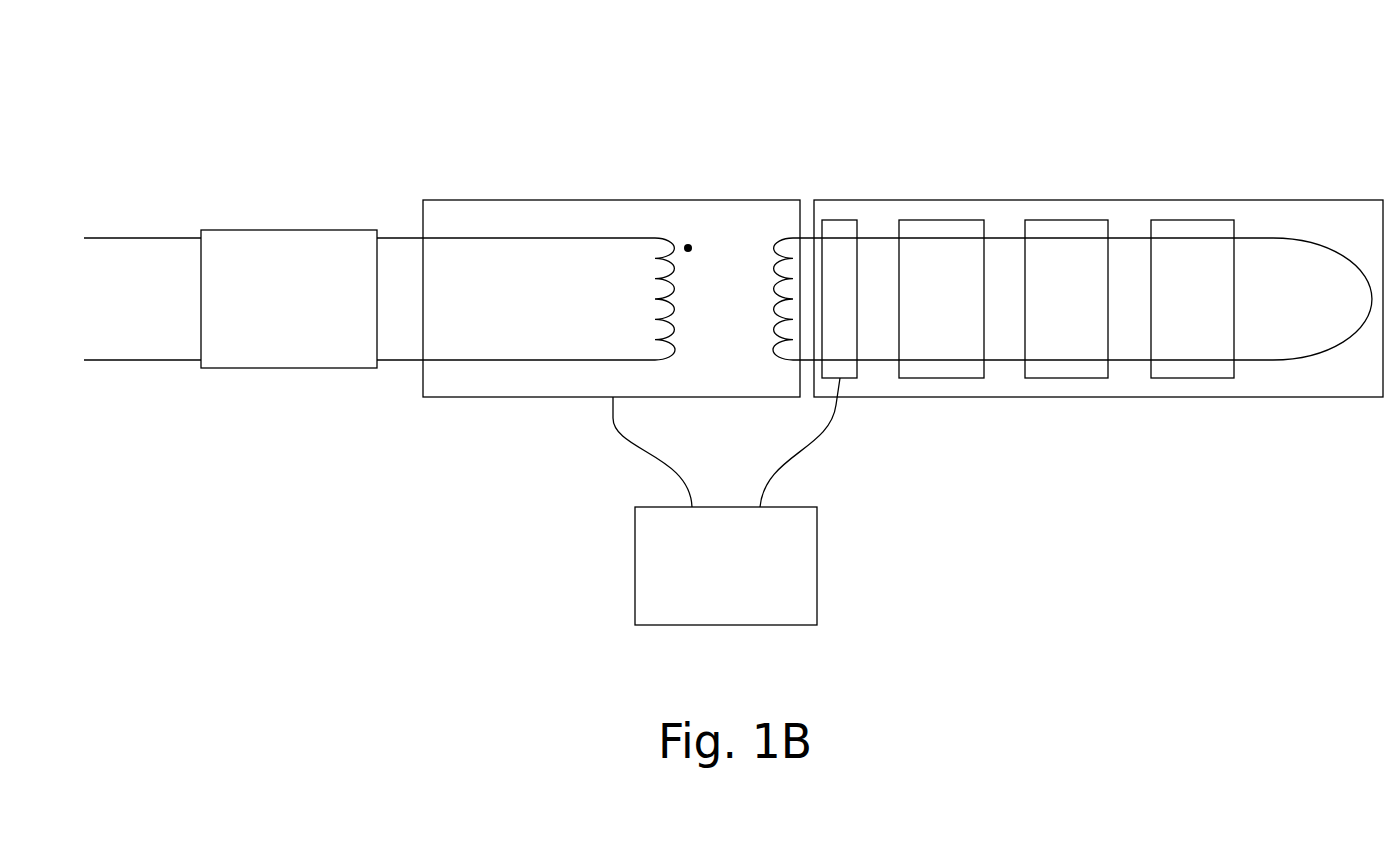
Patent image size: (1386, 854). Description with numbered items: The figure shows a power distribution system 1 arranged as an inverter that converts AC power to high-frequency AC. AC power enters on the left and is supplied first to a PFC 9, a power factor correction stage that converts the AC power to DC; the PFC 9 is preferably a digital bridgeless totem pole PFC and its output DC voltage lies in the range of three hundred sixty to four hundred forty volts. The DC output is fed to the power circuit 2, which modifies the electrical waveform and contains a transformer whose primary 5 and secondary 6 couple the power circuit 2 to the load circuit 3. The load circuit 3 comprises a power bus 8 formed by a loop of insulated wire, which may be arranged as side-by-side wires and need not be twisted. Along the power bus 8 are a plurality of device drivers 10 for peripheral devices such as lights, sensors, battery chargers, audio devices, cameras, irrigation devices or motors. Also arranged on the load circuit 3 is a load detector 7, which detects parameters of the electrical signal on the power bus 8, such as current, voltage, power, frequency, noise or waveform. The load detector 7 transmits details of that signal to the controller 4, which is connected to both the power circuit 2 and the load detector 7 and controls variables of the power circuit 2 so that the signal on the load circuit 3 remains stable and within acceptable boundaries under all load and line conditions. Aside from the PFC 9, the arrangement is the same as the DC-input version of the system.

The power distribution system 1 is at (404, 89).
The power circuit 2 is at (533, 200).
The load circuit 3 is at (880, 200).
The controller 4 is at (817, 566).
The primary 5 is at (670, 245).
The secondary 6 is at (787, 240).
The load detector 7 is at (848, 379).
The power bus 8 is at (1137, 362).
The PFC 9 is at (295, 228).
The device drivers 10 is at (1085, 219).